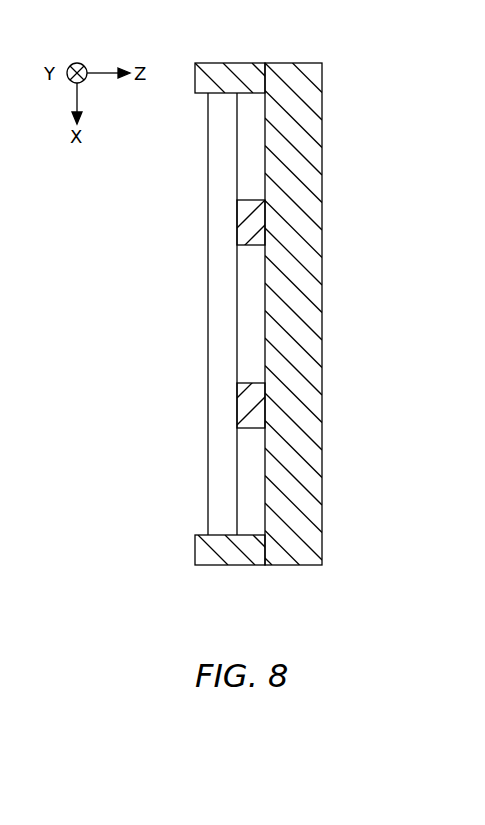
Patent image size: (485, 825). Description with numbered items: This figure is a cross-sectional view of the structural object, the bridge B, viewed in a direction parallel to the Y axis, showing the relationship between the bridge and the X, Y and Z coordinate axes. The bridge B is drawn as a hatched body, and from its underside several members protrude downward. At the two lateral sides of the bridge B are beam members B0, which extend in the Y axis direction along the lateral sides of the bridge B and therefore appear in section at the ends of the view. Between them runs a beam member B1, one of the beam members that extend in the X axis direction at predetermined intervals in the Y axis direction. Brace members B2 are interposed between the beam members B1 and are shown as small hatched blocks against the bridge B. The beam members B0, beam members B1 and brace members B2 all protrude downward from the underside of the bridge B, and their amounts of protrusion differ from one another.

The bridge B is at (308, 247).
The beam member B0 is at (222, 77).
The beam member B1 is at (215, 175).
The brace member B2 is at (240, 402).